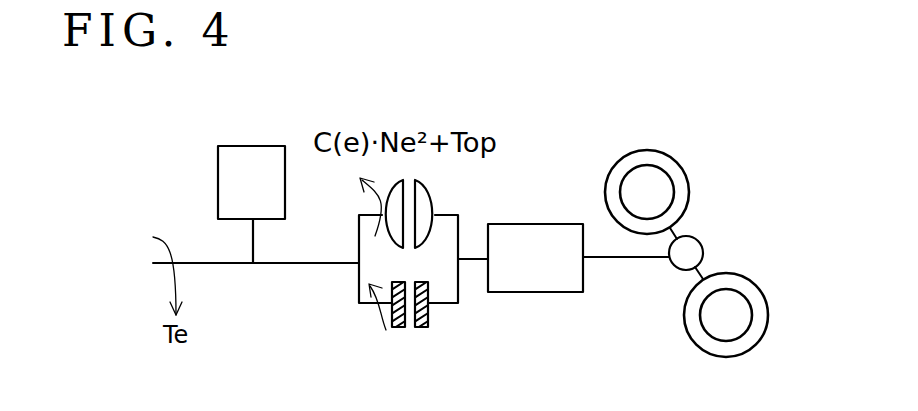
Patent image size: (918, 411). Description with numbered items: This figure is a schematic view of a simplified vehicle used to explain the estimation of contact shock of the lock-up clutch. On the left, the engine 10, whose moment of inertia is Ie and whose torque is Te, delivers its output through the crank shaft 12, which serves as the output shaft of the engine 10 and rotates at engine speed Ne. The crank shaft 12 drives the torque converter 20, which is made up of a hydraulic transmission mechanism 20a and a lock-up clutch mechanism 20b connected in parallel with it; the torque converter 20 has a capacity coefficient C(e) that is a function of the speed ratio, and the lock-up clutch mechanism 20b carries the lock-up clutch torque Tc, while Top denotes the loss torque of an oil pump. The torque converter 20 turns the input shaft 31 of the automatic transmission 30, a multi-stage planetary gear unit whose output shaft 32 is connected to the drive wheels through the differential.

The engine 10 is at (218, 186).
The crank shaft 12 is at (297, 265).
The torque converter 20 is at (437, 272).
The hydraulic transmission mechanism 20a is at (431, 327).
The lock-up clutch mechanism 20b is at (433, 185).
The automatic transmission 30 is at (541, 224).
The input shaft 31 is at (472, 257).
The output shaft 32 is at (613, 258).